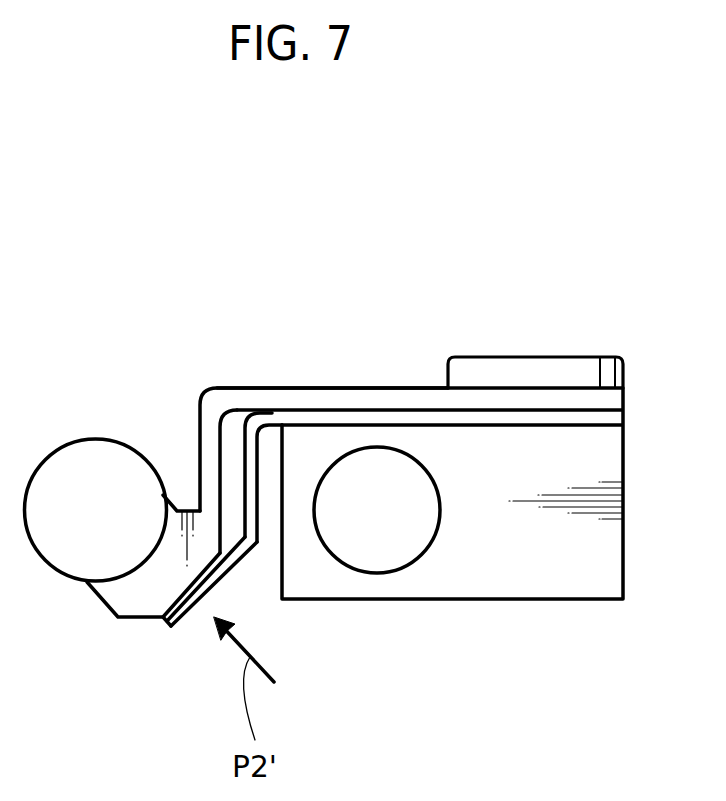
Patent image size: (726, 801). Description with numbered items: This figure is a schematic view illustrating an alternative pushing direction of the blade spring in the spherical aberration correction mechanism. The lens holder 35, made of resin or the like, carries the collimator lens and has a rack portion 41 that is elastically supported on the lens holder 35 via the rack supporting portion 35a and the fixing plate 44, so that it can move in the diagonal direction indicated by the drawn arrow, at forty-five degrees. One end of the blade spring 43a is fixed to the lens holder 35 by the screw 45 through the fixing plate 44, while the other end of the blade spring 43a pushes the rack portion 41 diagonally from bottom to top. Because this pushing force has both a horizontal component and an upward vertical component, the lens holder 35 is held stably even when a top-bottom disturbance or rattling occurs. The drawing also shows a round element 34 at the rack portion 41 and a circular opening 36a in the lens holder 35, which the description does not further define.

The roller 34 is at (50, 542).
The lens holder 35 is at (465, 578).
The rack supporting portion 35a is at (204, 407).
The circular hole 36a is at (372, 552).
The rack portion 41 is at (135, 593).
The blade spring 43a is at (180, 620).
The fixing plate 44 is at (396, 405).
The screw 45 is at (518, 377).